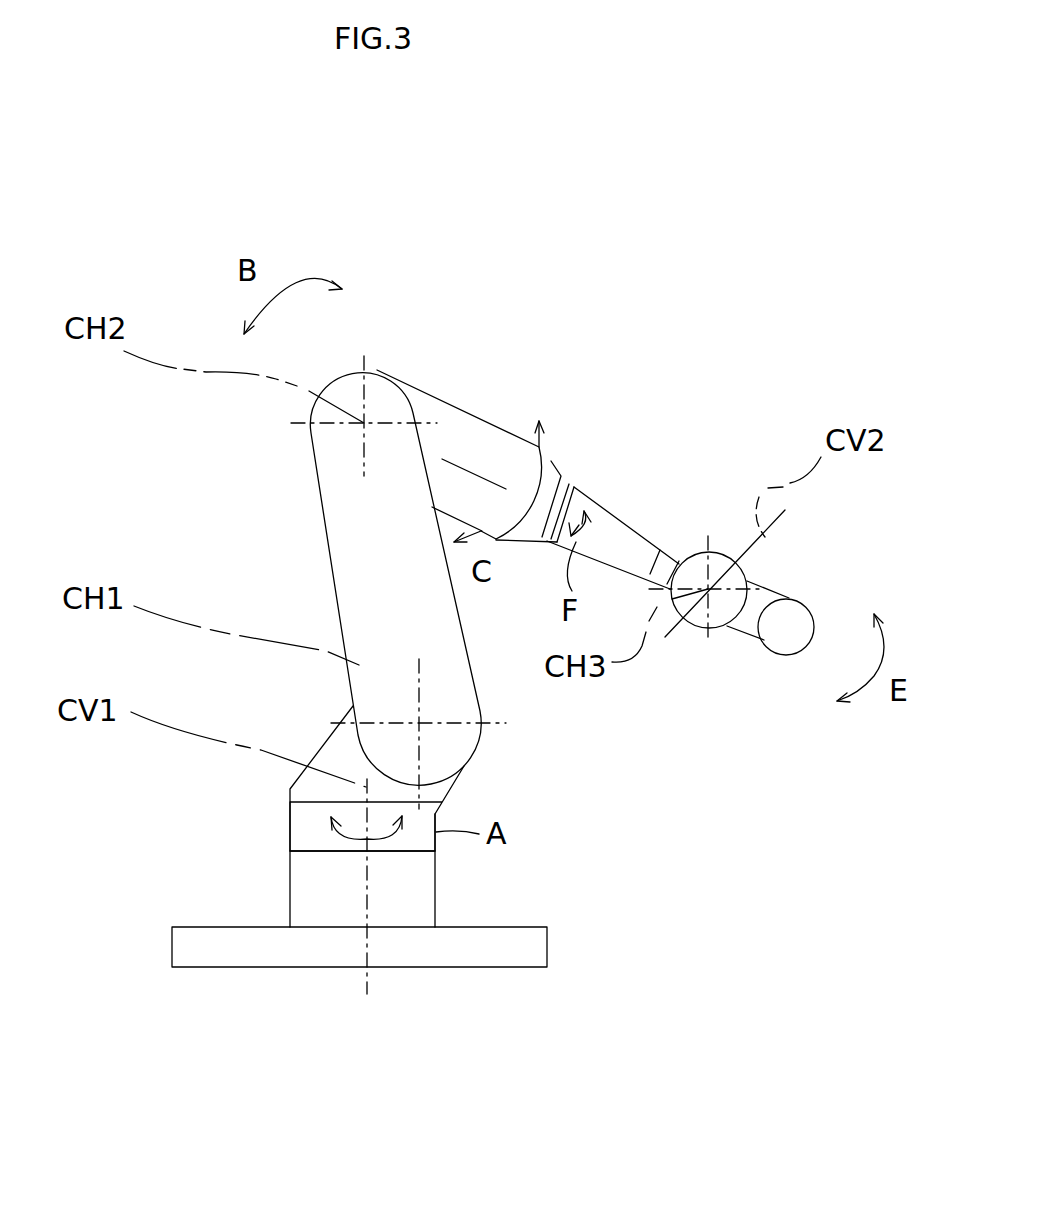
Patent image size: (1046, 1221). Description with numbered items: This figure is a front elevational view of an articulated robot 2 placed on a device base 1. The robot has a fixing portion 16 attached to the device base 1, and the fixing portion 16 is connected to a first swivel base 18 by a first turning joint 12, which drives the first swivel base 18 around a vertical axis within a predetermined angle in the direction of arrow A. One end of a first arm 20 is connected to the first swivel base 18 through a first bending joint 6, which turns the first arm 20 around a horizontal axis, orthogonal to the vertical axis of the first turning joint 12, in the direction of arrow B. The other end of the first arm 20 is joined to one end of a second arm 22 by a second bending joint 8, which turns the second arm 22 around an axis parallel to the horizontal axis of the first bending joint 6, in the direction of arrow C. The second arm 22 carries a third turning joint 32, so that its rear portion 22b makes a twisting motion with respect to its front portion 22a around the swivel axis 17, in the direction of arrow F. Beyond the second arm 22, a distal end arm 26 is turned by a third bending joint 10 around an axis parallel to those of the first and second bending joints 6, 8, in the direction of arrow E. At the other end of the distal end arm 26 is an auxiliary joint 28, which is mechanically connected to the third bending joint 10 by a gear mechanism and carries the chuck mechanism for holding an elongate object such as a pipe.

The device base 1 is at (232, 953).
The articulated robot 2 is at (298, 507).
The first bending joint 6 is at (307, 693).
The second bending joint 8 is at (428, 377).
The third bending joint 10 is at (718, 527).
The first turning joint 12 is at (285, 844).
The fixing portion 16 is at (330, 897).
The swivel axis 17 is at (585, 480).
The first swivel base 18 is at (320, 825).
The first arm 20 is at (372, 605).
The second arm 22 is at (472, 448).
The front portion 22a is at (455, 422).
The rear portion 22b is at (607, 528).
The distal end arm 26 is at (748, 620).
The auxiliary joint 28 is at (789, 651).
The third turning joint 32 is at (570, 467).